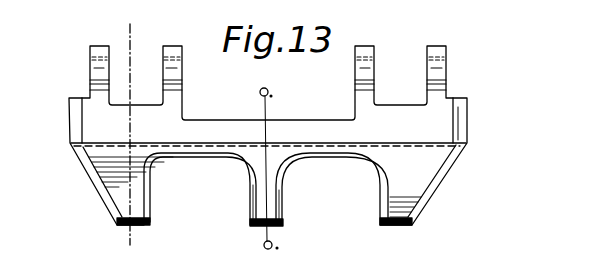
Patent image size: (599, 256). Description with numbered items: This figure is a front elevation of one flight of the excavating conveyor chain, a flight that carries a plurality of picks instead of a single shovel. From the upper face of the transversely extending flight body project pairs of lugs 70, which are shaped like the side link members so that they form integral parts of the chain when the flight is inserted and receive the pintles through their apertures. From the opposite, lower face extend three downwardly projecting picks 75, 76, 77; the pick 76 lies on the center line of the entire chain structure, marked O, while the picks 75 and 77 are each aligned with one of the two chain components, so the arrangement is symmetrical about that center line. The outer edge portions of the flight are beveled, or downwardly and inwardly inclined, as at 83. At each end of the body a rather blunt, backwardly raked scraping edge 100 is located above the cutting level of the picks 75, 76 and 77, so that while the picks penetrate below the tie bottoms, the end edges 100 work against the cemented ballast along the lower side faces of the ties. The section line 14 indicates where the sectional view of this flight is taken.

The section line 14 is at (154, 24).
The lugs 70 is at (102, 68).
The scraping edge 100 is at (73, 123).
The beveled outer edge portion 83 is at (93, 185).
The pick 75 is at (138, 202).
The pick 76 is at (266, 205).
The pick 77 is at (395, 200).